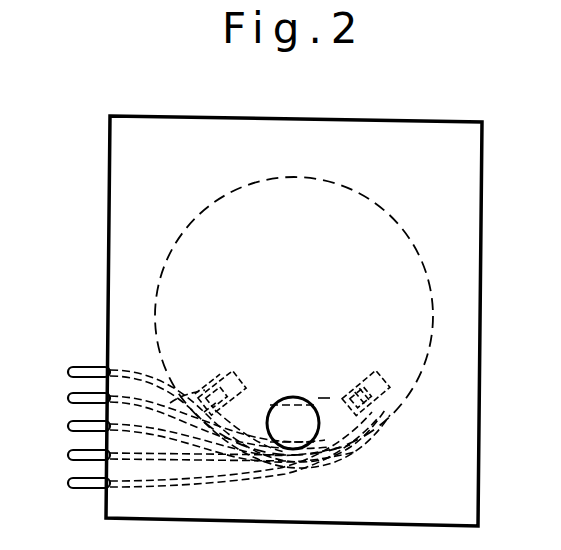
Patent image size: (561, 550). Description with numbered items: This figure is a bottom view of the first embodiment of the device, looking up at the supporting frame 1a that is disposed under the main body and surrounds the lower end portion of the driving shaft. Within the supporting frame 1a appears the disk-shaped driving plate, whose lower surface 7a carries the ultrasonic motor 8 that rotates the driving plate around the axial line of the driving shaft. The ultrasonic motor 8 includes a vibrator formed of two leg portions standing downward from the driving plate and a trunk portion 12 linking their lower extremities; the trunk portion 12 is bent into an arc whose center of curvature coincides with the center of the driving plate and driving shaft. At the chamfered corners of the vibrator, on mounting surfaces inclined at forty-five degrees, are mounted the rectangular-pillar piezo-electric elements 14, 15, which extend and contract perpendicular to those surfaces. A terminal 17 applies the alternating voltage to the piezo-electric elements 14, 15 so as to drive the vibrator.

The supporting frame 1a is at (466, 152).
The lower surface of the driving plate 7a is at (364, 232).
The ultrasonic motor 8 is at (262, 402).
The trunk portion 12 is at (326, 398).
The piezo-electric element 14 is at (212, 378).
The piezo-electric element 15 is at (400, 353).
The terminal 17 is at (62, 357).